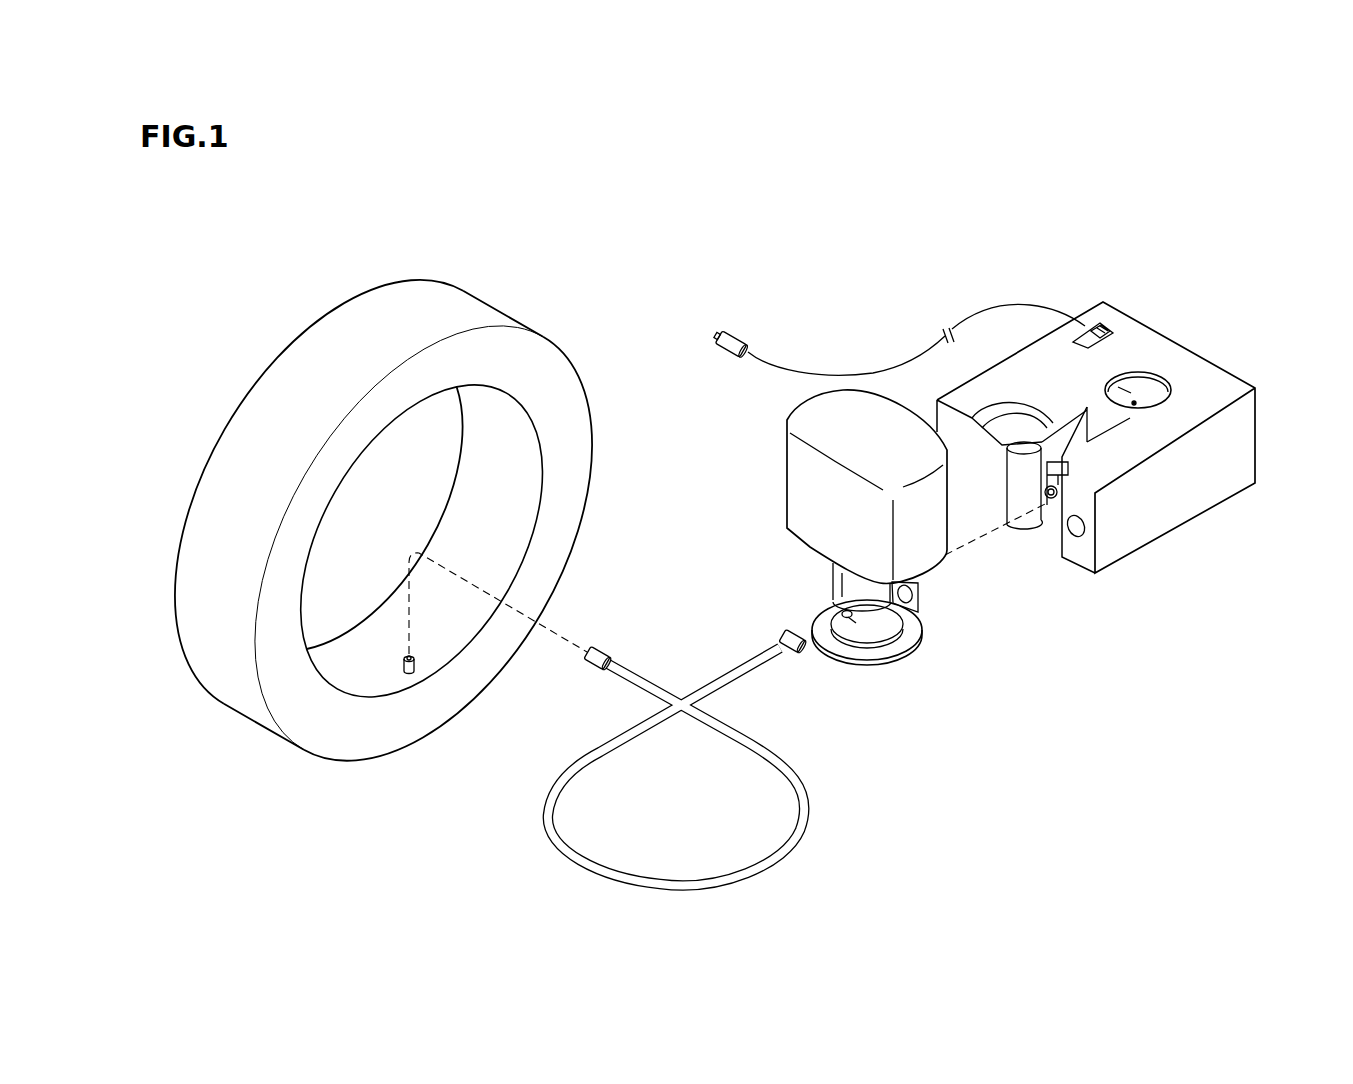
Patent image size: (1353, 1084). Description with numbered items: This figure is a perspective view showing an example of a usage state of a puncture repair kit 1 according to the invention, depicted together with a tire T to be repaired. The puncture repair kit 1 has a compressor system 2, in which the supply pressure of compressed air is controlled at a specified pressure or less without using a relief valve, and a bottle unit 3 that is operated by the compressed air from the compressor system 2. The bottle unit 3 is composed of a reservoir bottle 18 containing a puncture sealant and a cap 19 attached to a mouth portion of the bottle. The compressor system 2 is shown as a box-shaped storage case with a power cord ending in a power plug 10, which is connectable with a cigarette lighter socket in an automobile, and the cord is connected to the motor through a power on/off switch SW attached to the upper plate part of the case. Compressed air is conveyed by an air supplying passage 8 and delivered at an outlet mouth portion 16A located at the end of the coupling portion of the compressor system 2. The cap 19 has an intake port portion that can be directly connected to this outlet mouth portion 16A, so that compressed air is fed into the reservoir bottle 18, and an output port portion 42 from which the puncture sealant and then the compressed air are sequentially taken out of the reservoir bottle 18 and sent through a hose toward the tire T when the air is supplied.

The puncture repair kit 1 is at (996, 612).
The tire T is at (335, 353).
The compressor system 2 is at (1175, 303).
The bottle unit 3 is at (695, 508).
The reservoir bottle 18 is at (823, 520).
The cap 19 is at (830, 590).
The output port portion 42 is at (849, 625).
The power plug 10 is at (740, 335).
The power on/off switch SW is at (1090, 338).
The air supplying passage 8 is at (1110, 559).
The outlet mouth portion 16A is at (1047, 500).